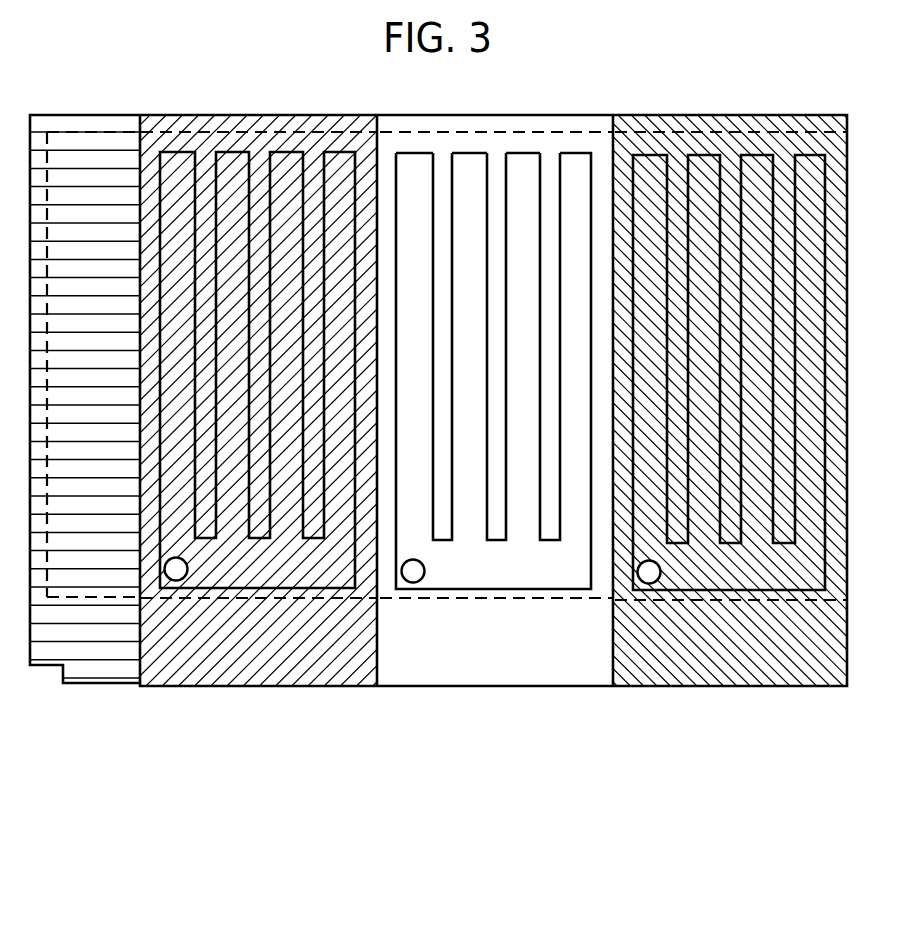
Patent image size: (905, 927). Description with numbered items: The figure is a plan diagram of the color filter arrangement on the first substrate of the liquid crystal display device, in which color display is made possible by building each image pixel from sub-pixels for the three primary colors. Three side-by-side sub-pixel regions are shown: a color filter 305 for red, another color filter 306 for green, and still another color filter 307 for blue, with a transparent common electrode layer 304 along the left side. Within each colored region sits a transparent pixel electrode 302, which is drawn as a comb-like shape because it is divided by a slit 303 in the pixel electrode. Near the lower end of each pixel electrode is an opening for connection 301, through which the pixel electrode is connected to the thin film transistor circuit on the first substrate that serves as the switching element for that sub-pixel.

The opening for connection 301 is at (413, 571).
The transparent pixel electrode 302 is at (457, 563).
The slit in the pixel electrode 303 is at (493, 522).
The transparent common electrode layer 304 is at (108, 597).
The color filter (red) 305 is at (215, 633).
The color filter (green) 306 is at (545, 635).
The color filter (blue) 307 is at (785, 637).